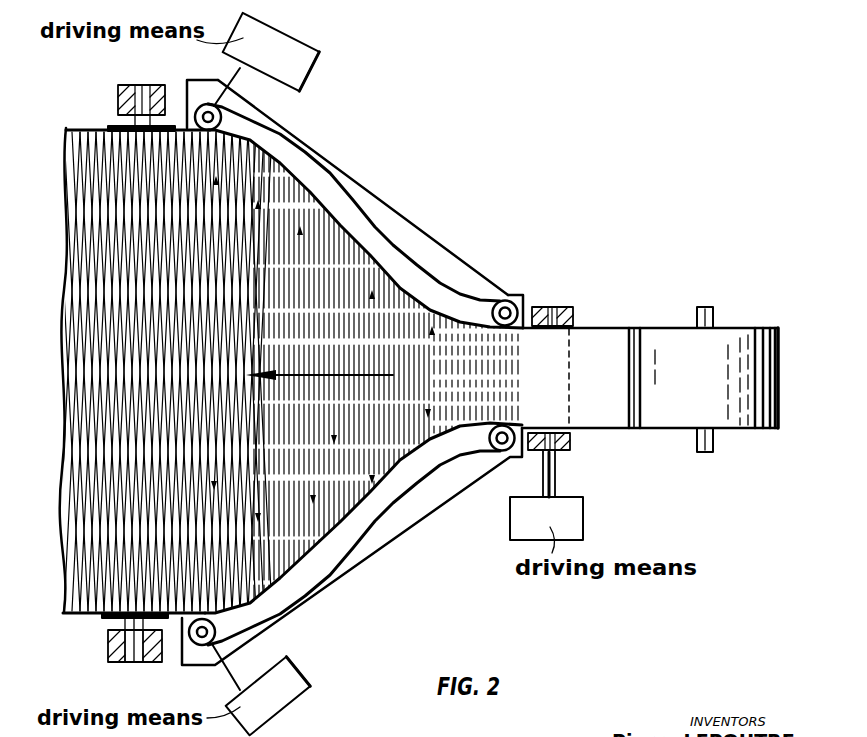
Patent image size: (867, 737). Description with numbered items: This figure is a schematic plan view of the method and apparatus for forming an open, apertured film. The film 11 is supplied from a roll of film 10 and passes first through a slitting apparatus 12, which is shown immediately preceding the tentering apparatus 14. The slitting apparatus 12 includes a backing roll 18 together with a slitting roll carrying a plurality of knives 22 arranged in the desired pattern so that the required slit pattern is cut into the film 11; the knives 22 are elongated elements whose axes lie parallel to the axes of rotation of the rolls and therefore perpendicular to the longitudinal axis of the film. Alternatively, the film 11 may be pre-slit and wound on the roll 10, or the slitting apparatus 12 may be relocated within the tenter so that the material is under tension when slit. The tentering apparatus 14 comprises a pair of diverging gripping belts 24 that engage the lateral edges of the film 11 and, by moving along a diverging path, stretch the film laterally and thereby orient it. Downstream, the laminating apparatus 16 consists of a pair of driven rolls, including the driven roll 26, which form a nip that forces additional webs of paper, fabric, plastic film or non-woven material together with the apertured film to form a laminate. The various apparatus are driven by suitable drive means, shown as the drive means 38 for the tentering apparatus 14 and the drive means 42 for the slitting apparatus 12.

The roll of film 10 is at (727, 348).
The film 11 is at (609, 422).
The slitting apparatus 12 is at (562, 307).
The tentering apparatus 14 is at (371, 196).
The laminating apparatus 16 is at (173, 81).
The backing roll 18 is at (574, 327).
The knives 22 is at (473, 264).
The gripping belts 24 is at (388, 238).
The driven roll 26 is at (115, 125).
The drive means 38 is at (318, 53).
The drive means 42 is at (575, 529).